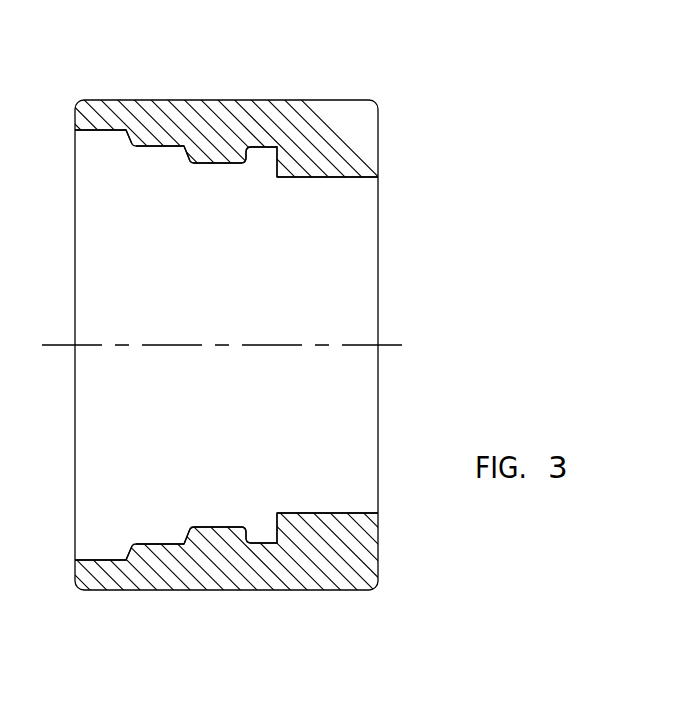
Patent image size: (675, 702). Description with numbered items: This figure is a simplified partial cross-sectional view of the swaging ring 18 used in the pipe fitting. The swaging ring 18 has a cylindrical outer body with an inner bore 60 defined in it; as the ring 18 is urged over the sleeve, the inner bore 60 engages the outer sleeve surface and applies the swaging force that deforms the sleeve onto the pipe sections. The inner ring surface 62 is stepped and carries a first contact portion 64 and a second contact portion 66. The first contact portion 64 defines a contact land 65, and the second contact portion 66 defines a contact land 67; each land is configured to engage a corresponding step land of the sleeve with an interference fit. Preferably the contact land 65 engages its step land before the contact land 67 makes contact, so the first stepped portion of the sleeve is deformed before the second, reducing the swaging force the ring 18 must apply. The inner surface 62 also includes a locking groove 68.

The swaging ring 18 is at (333, 92).
The inner bore 60 is at (194, 280).
The inner ring surface 62 is at (352, 178).
The first contact portion 64 is at (189, 152).
The contact land 65 is at (220, 165).
The second contact portion 66 is at (128, 136).
The contact land 67 is at (150, 146).
The locking groove 68 is at (273, 167).